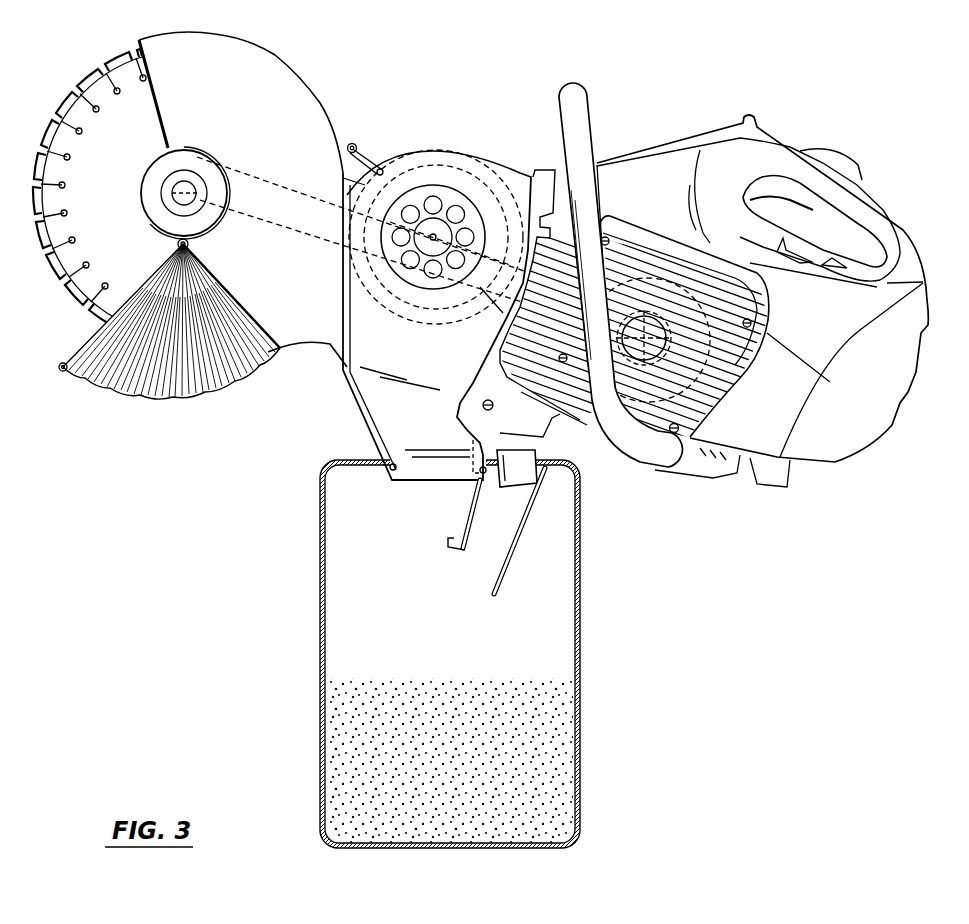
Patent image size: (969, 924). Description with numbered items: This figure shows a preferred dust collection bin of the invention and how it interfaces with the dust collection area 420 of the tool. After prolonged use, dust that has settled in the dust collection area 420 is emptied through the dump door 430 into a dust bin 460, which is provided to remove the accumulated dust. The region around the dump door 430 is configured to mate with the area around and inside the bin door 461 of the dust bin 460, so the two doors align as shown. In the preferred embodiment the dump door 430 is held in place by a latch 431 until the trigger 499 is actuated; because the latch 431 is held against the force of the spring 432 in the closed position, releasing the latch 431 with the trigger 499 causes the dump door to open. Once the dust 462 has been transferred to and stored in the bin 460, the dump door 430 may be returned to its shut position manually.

The trigger 499 is at (352, 146).
The dust collection area 420 is at (333, 365).
The dump door 430 is at (467, 505).
The latch 431 is at (443, 543).
The spring 432 is at (485, 477).
The dust bin 460 is at (581, 692).
The bin door 461 is at (497, 583).
The dust 462 is at (506, 773).